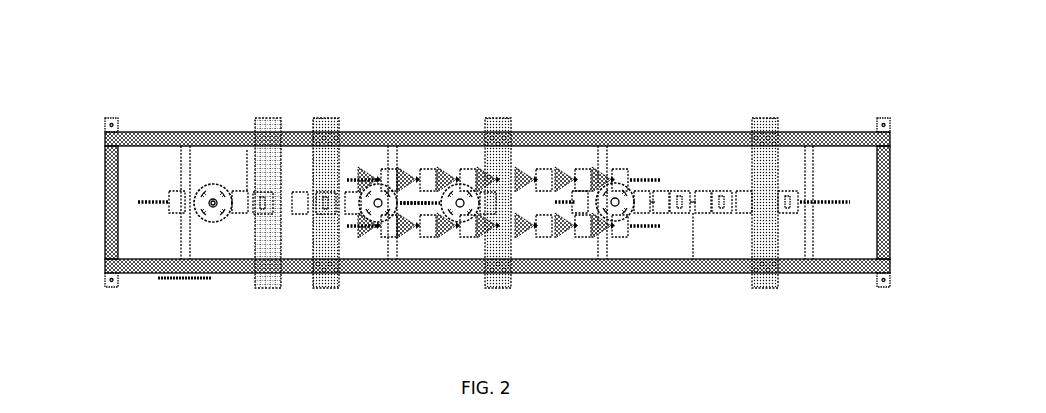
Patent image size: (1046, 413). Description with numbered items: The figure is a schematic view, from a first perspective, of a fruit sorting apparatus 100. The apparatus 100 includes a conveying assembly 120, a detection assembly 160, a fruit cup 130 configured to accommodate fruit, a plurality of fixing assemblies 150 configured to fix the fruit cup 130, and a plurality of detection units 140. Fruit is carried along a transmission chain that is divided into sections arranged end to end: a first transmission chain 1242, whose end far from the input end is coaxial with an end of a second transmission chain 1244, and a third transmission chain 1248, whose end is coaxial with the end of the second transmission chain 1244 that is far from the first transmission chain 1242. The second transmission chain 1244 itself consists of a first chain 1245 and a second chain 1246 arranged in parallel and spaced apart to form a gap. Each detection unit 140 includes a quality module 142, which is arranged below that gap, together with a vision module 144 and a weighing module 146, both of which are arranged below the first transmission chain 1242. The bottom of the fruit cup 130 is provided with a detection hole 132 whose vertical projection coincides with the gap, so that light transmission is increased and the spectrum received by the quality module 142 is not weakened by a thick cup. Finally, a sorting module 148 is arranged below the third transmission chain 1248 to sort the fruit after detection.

The fruit sorting apparatus 100 is at (484, 71).
The conveying assembly 120 is at (639, 178).
The fruit cup 130 is at (203, 189).
The detection hole 132 is at (214, 210).
The detection unit 140 is at (497, 296).
The quality module 142 is at (500, 118).
The vision module 144 is at (272, 118).
The weighing module 146 is at (330, 290).
The sorting module 148 is at (768, 288).
The fixing assembly 150 is at (422, 168).
The detection assembly 160 is at (186, 281).
The first transmission chain 1242 is at (247, 150).
The second transmission chain 1244 is at (456, 168).
The first chain 1245 is at (534, 167).
The second chain 1246 is at (540, 238).
The third transmission chain 1248 is at (693, 259).